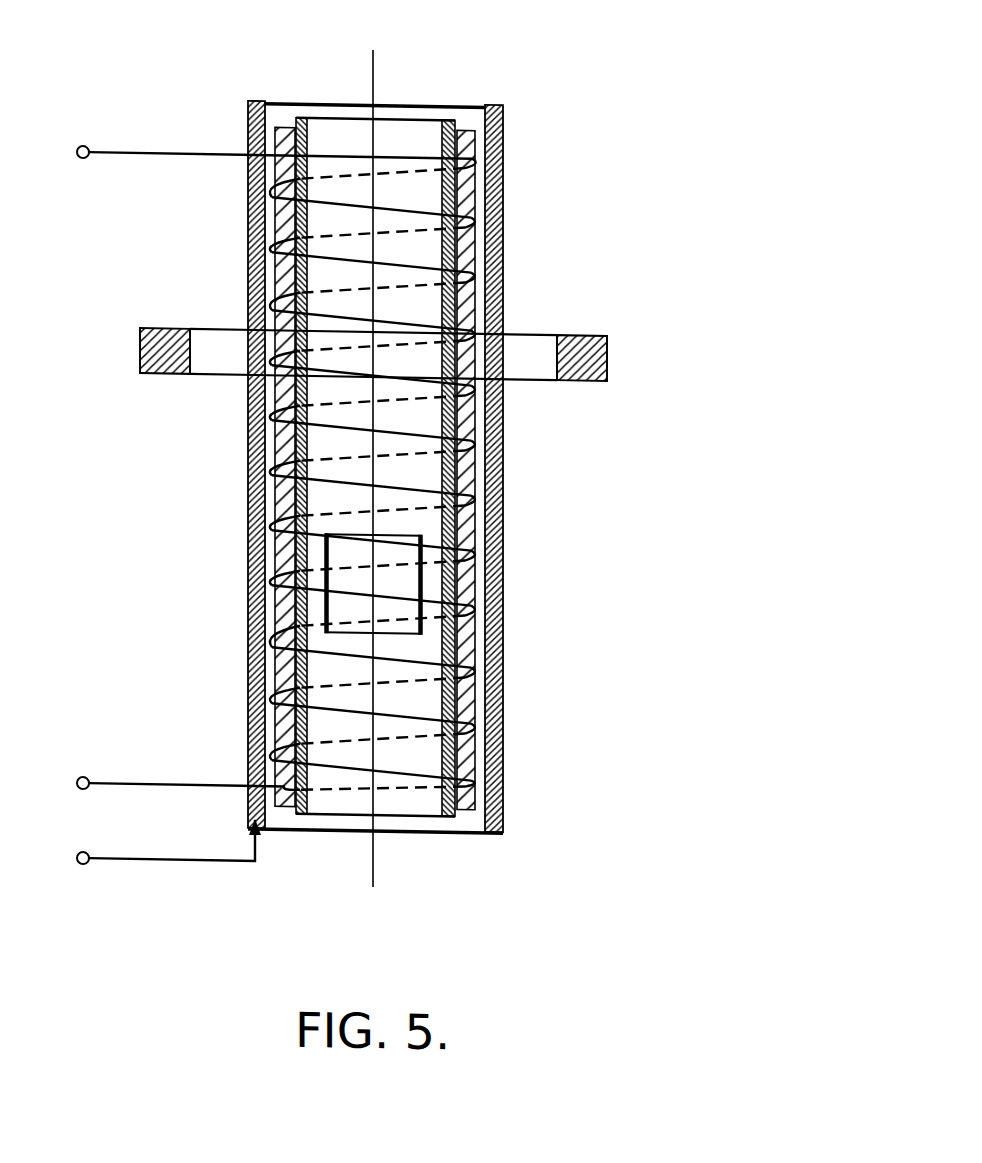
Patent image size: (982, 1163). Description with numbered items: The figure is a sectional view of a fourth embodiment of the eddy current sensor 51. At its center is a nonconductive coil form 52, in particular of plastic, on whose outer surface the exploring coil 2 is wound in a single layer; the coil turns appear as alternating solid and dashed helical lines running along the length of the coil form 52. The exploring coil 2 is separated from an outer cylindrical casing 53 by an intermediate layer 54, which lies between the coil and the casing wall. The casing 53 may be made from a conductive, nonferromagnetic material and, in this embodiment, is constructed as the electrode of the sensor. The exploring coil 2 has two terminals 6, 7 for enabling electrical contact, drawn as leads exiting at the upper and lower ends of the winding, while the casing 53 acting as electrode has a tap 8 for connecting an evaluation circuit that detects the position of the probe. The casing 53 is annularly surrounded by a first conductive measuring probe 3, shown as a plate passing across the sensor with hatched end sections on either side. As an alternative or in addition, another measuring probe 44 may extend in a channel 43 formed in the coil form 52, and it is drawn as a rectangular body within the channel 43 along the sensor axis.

The exploring coil 2 is at (411, 265).
The measuring probe 3 is at (138, 355).
The terminal 6 is at (161, 785).
The terminal 7 is at (255, 157).
The tap 8 is at (146, 848).
The channel 43 is at (348, 147).
The measuring probe 44 is at (302, 590).
The eddy current sensor 51 is at (518, 162).
The coil form 52 is at (456, 634).
The casing 53 is at (245, 472).
The intermediate layer 54 is at (478, 474).